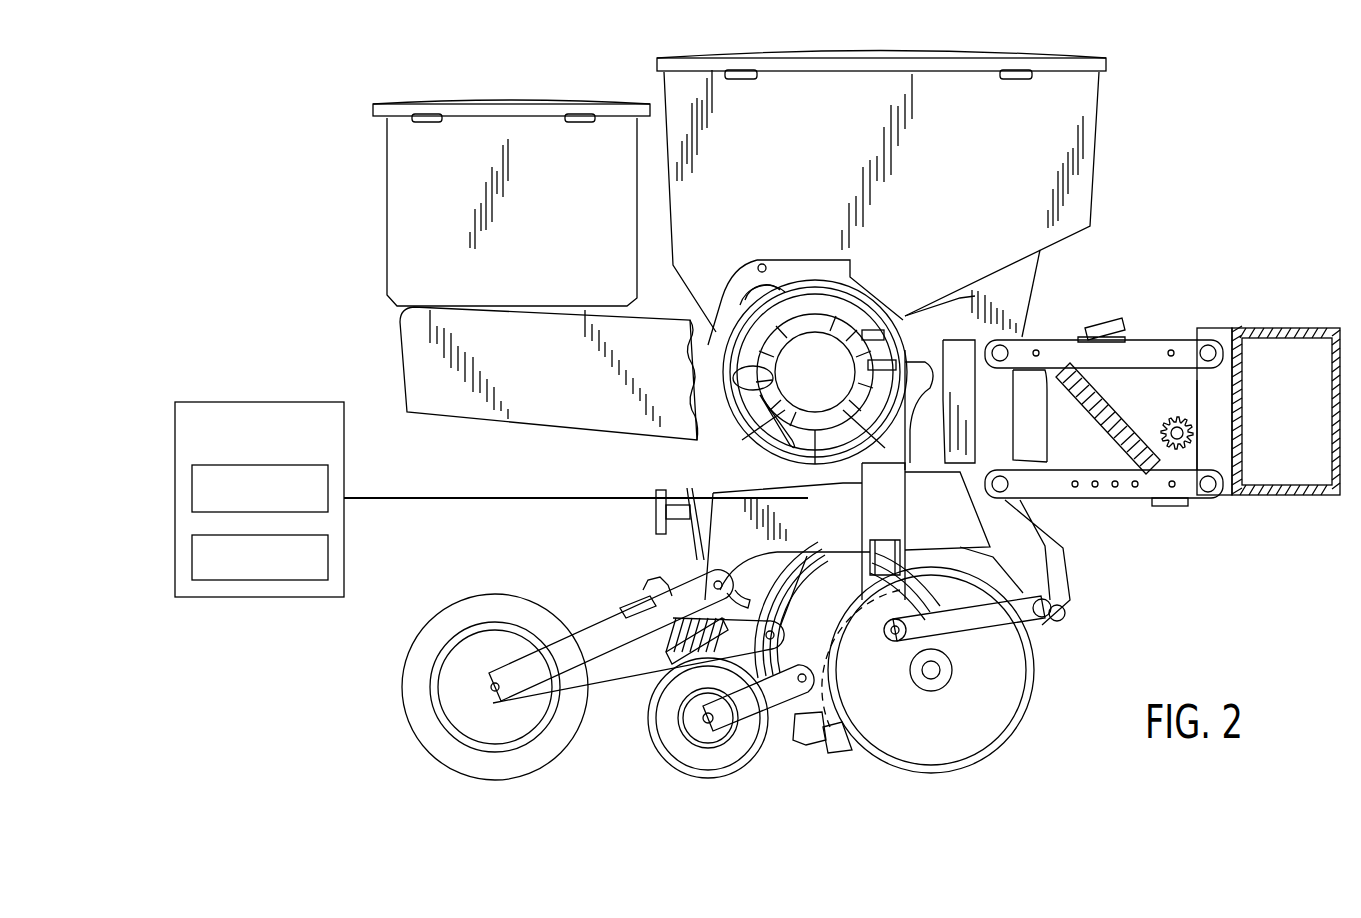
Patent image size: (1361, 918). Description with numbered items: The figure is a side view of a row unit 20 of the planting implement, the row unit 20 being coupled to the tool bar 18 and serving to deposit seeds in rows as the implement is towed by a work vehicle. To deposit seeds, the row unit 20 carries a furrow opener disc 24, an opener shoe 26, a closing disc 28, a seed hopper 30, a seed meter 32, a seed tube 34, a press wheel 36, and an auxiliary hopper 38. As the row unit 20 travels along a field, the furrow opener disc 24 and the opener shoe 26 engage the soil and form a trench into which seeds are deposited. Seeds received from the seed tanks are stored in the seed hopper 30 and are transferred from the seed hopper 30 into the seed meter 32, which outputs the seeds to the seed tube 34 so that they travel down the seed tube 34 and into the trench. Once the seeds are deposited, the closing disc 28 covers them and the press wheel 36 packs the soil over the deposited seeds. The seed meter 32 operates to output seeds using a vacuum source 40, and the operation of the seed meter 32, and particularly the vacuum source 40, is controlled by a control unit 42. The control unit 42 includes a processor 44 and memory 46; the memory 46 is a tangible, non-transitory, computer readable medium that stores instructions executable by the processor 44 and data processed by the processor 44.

The tool bar 18 is at (1288, 326).
The row unit 20 is at (640, 521).
The furrow opener disc 24 is at (1010, 712).
The opener shoe 26 is at (842, 745).
The closing disc 28 is at (740, 742).
The seed hopper 30 is at (840, 152).
The seed meter 32 is at (893, 290).
The seed tube 34 is at (858, 510).
The press wheel 36 is at (436, 625).
The auxiliary hopper 38 is at (585, 202).
The vacuum source 40 is at (740, 405).
The control unit 42 is at (288, 456).
The processor 44 is at (330, 492).
The memory 46 is at (330, 562).